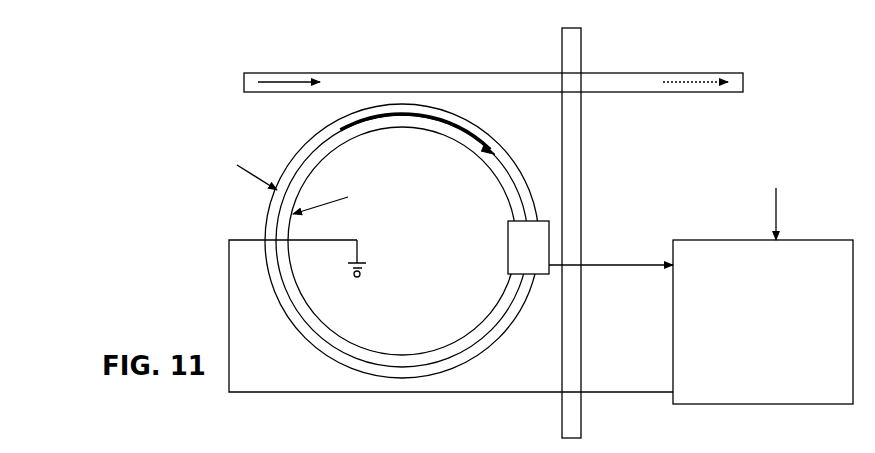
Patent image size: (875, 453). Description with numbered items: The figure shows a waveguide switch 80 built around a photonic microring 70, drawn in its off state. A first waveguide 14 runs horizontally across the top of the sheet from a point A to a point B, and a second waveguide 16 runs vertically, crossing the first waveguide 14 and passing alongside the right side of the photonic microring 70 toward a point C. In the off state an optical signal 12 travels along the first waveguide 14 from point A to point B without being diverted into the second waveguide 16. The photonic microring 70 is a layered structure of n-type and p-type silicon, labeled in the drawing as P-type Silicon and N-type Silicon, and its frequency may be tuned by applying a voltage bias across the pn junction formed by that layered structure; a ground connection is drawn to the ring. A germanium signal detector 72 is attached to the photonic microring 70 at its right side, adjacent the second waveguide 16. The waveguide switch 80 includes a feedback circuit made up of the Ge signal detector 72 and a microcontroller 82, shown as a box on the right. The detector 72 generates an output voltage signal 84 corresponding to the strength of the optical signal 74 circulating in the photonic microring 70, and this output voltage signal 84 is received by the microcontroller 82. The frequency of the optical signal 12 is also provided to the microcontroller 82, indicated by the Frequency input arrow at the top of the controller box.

The optical signal 12 is at (283, 82).
The first waveguide 14 is at (365, 77).
The second waveguide 16 is at (582, 127).
The photonic microring 70 is at (522, 160).
The germanium signal detector 72 is at (552, 238).
The optical signal in the photonic microring 74 is at (457, 121).
The waveguide switch 80 is at (147, 146).
The microcontroller 82 is at (763, 286).
The output voltage signal 84 is at (617, 265).